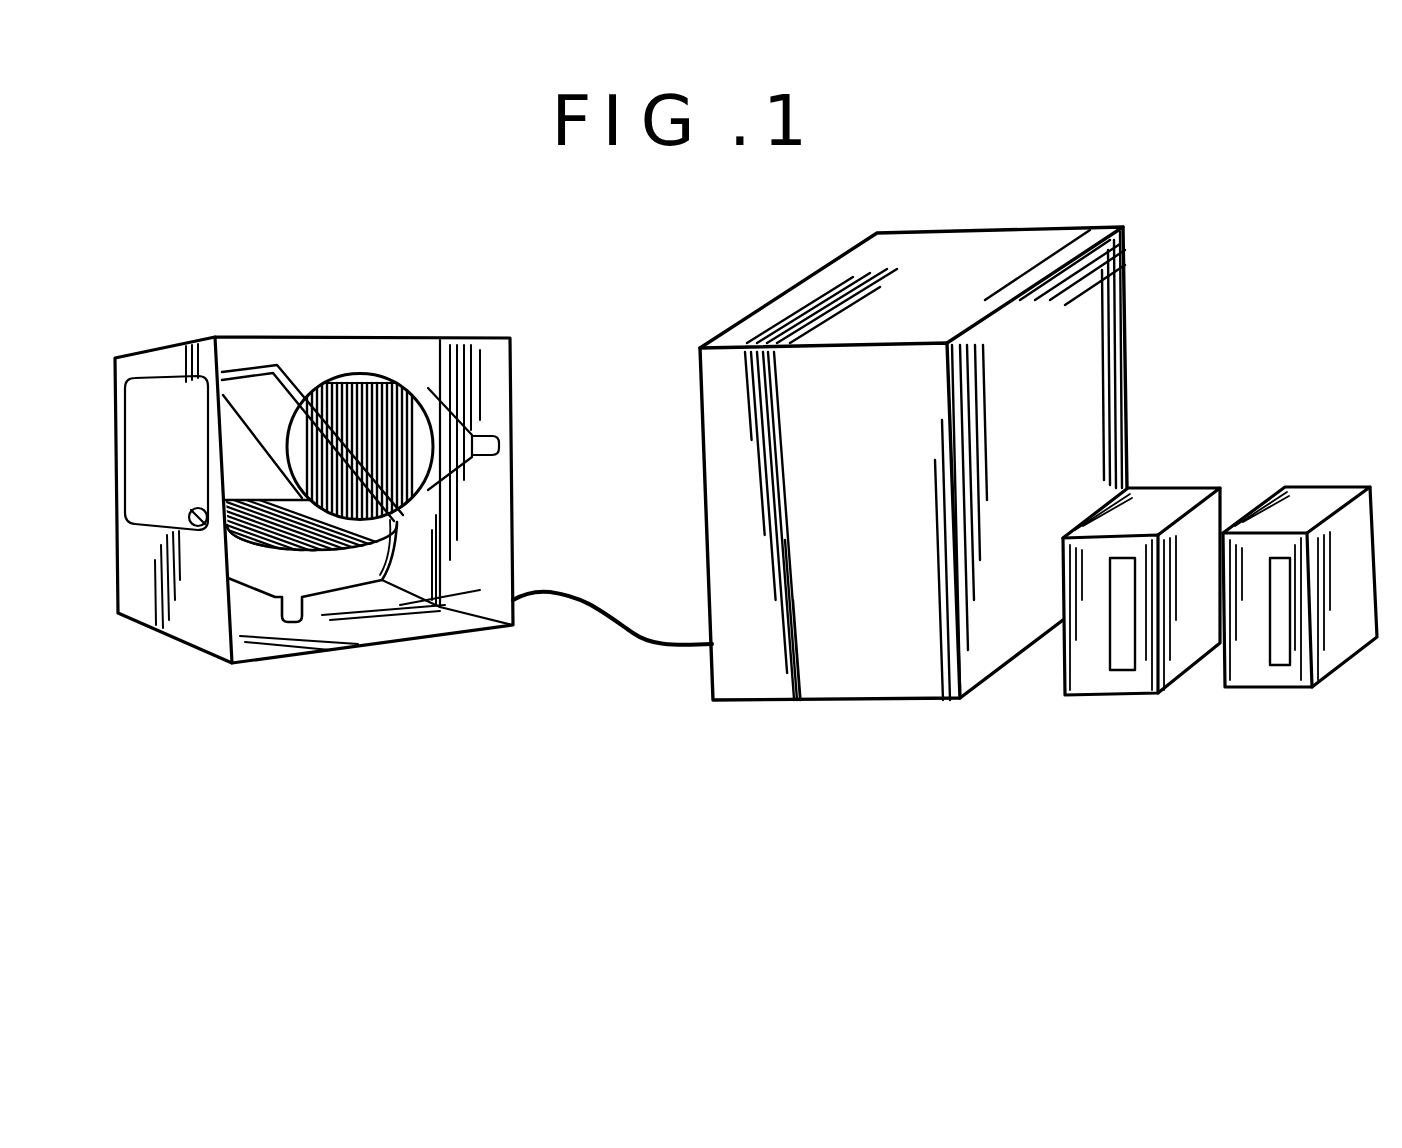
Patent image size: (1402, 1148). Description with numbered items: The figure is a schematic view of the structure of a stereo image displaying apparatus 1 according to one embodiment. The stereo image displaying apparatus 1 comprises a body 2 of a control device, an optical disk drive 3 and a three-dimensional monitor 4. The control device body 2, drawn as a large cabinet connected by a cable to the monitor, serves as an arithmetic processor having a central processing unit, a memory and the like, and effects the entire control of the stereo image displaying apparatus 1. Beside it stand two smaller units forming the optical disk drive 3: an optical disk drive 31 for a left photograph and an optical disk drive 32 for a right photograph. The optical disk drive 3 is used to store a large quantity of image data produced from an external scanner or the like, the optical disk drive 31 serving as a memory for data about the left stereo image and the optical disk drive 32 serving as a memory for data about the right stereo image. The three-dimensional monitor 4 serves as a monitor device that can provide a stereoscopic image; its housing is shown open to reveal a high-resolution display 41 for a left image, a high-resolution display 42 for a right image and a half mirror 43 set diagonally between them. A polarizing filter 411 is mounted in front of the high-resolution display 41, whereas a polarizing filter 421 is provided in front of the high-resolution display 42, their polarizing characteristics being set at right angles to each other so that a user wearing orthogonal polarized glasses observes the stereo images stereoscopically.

The stereo image displaying apparatus 1 is at (632, 780).
The body of a control device 2 is at (850, 688).
The optical disk drive 3 is at (1167, 706).
The optical disk drive for a left photograph 31 is at (1170, 507).
The optical disk drive for a right photograph 32 is at (1310, 500).
The 3D monitor 4 is at (395, 625).
The high-resolution display for a left image 41 is at (430, 400).
The polarizing filter 411 is at (345, 387).
The high-resolution display for a right image 42 is at (263, 572).
The polarizing filter 421 is at (222, 522).
The half mirror 43 is at (260, 393).